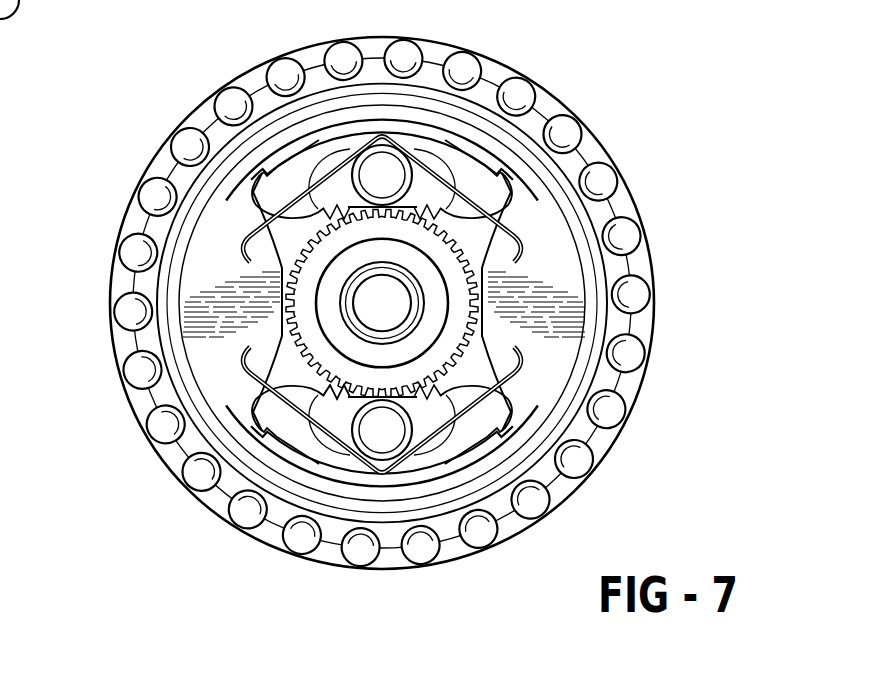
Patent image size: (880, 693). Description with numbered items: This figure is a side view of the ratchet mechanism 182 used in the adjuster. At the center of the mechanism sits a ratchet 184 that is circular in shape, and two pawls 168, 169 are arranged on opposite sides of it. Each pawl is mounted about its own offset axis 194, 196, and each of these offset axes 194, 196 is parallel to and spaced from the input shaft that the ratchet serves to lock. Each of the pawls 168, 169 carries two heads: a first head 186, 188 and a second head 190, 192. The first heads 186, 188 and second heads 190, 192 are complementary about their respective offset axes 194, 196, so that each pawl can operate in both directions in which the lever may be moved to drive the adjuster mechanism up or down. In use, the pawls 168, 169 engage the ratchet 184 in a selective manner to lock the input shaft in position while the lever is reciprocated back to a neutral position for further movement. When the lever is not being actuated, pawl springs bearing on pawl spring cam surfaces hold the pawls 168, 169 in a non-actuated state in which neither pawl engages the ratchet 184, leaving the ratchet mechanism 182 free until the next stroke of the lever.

The pawl 168 is at (292, 212).
The pawl 169 is at (317, 415).
The ratchet mechanism 182 is at (238, 347).
The ratchet 184 is at (288, 297).
The first head 186 is at (318, 210).
The first head 188 is at (448, 400).
The second head 190 is at (500, 216).
The second head 192 is at (313, 403).
The offset axis 194 is at (400, 174).
The offset axis 196 is at (398, 437).